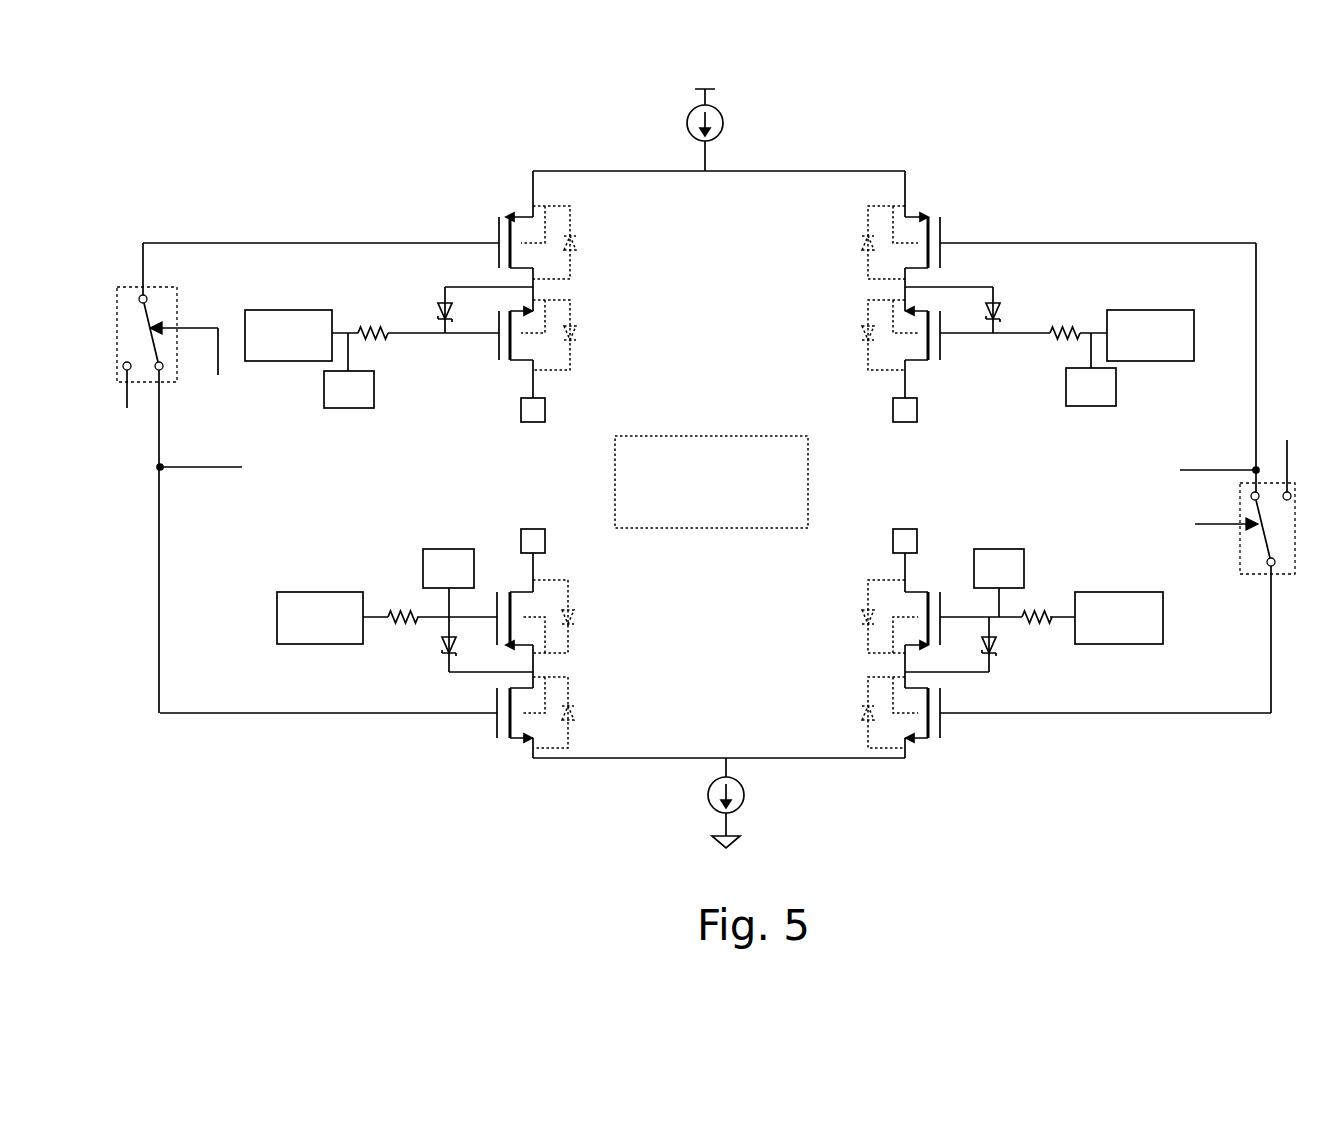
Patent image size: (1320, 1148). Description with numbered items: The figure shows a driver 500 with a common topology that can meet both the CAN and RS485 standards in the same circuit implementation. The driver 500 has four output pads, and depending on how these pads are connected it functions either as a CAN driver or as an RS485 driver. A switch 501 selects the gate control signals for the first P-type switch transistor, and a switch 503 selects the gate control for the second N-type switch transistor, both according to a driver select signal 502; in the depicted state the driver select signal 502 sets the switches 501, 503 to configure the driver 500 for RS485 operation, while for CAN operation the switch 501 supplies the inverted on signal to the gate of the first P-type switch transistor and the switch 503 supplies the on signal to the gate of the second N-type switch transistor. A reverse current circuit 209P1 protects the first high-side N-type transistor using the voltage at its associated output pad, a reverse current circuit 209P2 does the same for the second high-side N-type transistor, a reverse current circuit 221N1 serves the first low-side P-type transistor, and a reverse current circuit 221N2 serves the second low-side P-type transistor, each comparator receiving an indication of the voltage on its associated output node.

The driver 500 is at (1010, 160).
The switch 501 is at (177, 303).
The driver select signal 502 is at (218, 375).
The switch 503 is at (1258, 574).
The reverse current circuit 209P1 is at (374, 388).
The reverse current circuit 209P2 is at (1116, 388).
The reverse current circuit 221N1 is at (423, 571).
The reverse current circuit 221N2 is at (1024, 556).